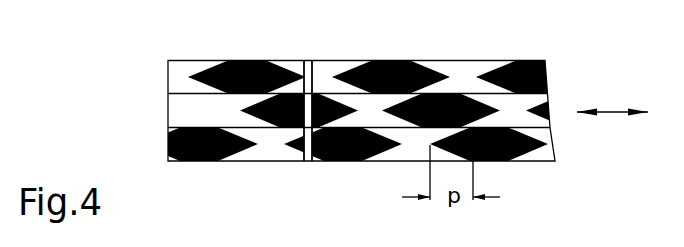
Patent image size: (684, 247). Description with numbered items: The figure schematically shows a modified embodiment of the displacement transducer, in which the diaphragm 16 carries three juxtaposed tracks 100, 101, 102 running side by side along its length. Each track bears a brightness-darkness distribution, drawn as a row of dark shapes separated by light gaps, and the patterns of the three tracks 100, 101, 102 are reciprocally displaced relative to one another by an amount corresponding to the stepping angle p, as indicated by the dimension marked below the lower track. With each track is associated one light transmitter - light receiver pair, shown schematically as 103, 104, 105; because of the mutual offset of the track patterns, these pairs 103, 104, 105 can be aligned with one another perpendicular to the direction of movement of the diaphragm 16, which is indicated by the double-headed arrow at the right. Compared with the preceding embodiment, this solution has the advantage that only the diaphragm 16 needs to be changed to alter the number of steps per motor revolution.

The laminated strip / tape 16 is at (537, 156).
The track 100 is at (187, 67).
The track 101 is at (172, 108).
The track 102 is at (267, 152).
The light transmitter - light receiver pair 103 is at (304, 75).
The light transmitter - light receiver pair 104 is at (312, 92).
The light transmitter - light receiver pair 105 is at (308, 162).